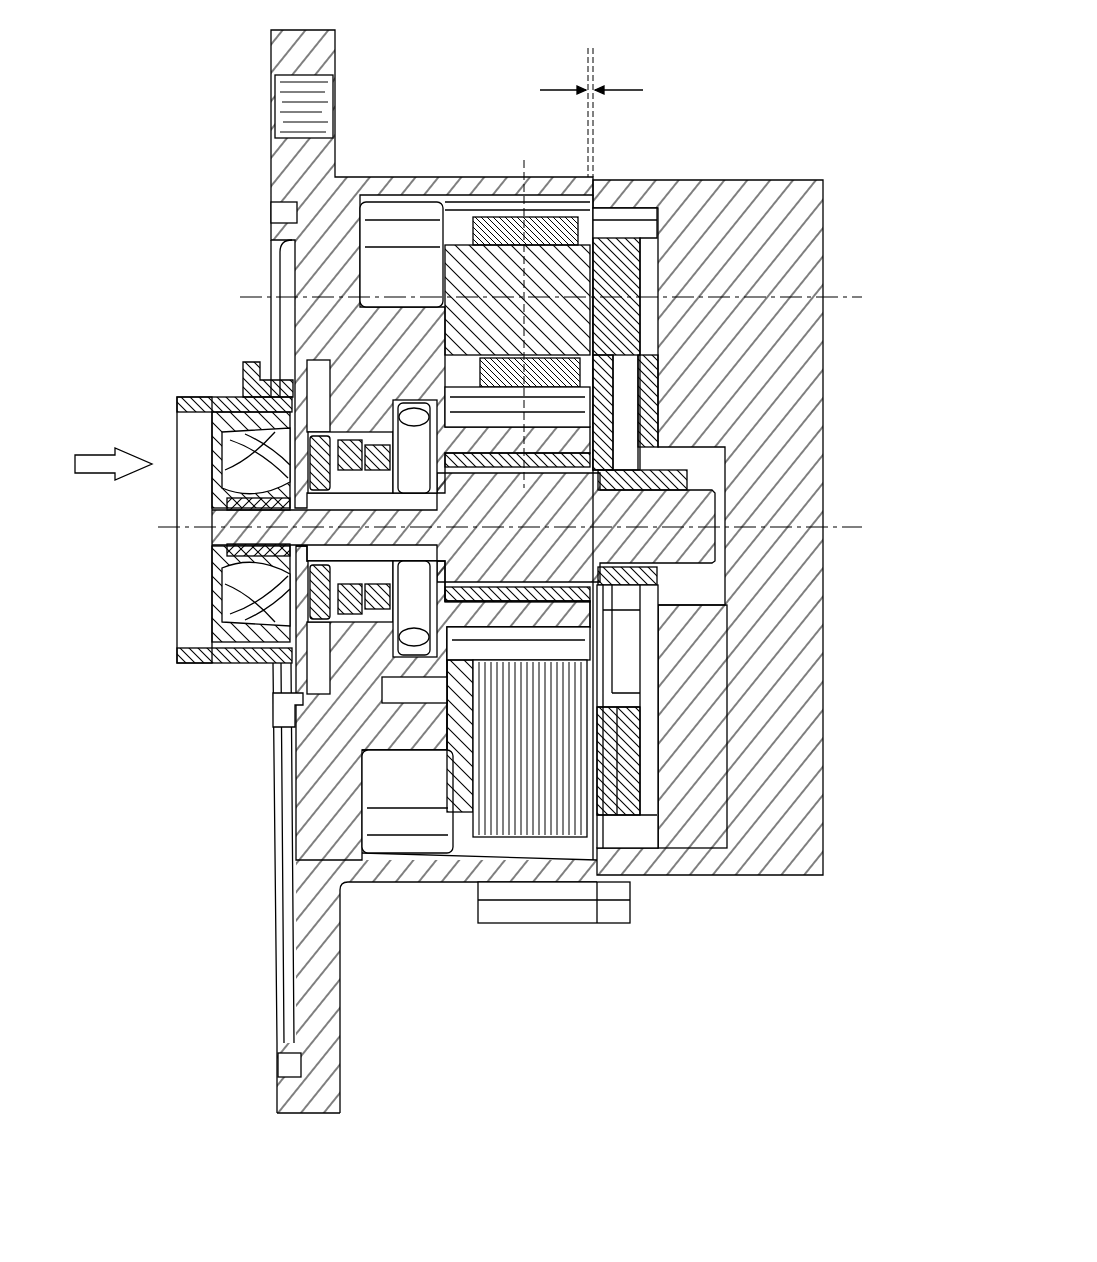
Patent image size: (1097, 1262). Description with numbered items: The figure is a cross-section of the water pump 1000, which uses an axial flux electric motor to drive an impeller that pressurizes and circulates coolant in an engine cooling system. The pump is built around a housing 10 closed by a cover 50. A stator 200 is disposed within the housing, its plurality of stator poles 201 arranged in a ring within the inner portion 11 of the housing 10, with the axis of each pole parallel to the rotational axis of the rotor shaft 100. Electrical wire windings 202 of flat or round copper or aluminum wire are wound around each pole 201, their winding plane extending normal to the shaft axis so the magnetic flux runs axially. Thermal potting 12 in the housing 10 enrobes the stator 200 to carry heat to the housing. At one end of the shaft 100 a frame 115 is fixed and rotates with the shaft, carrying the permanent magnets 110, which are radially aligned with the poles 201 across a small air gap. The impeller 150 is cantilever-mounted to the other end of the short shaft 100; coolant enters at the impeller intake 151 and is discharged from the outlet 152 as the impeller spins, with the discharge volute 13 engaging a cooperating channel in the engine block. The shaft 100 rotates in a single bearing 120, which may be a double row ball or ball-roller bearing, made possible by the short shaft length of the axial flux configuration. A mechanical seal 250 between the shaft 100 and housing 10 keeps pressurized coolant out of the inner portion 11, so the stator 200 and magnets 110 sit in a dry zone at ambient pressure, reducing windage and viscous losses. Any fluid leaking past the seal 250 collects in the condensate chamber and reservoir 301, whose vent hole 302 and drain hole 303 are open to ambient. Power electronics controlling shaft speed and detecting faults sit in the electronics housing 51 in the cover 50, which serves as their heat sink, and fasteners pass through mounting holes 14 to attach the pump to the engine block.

The water pump 1000 is at (698, 78).
The housing 10 is at (290, 162).
The inner portion 11 is at (417, 843).
The thermal potting 12 is at (543, 905).
The discharge volute 13 is at (282, 858).
The mounting holes 14 is at (300, 103).
The cover 50 is at (821, 250).
The electronics housing 51 is at (692, 783).
The rotor shaft 100 is at (703, 502).
The permanent magnets 110 is at (607, 267).
The frame 115 is at (625, 288).
The single bearing 120 is at (553, 478).
The impeller 150 is at (172, 443).
The impeller intake 151 is at (152, 588).
The outlet 152 is at (250, 390).
The stator 200 is at (390, 237).
The stator poles 201 is at (464, 268).
The electrical wire windings 202 is at (503, 820).
The mechanical seal 250 is at (290, 700).
The condensate chamber and reservoir 301 is at (350, 445).
The vent hole 302 is at (405, 430).
The drain hole 303 is at (410, 640).